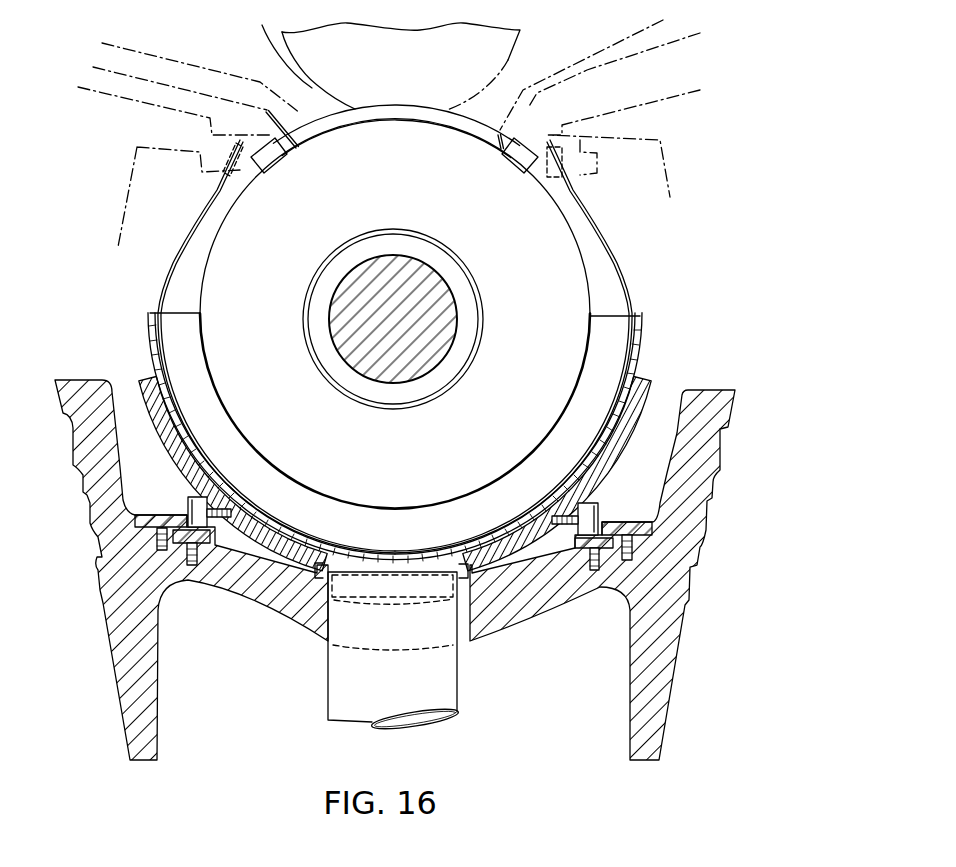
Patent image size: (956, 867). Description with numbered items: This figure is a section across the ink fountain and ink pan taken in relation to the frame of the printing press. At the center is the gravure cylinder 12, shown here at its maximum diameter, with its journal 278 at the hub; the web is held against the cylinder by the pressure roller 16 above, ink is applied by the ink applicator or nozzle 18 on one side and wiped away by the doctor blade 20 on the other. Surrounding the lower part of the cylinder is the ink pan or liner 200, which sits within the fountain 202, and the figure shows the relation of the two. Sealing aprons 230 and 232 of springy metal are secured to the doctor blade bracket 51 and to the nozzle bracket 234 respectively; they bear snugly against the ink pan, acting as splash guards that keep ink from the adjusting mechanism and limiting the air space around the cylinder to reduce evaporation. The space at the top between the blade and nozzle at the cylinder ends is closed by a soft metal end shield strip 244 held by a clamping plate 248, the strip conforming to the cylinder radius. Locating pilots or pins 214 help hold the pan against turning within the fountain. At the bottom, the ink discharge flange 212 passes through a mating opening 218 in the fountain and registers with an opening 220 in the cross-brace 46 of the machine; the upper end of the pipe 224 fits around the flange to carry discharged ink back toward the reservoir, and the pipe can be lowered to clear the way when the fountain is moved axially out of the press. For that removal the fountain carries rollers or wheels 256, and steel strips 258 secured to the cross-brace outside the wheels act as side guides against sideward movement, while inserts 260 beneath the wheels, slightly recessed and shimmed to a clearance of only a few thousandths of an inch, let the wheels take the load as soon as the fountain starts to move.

The gravure cylinder 12 is at (559, 213).
The pressure roller 16 is at (522, 45).
The ink applicator or nozzle 18 is at (500, 126).
The doctor blade 20 is at (305, 122).
The cross-brace 46 is at (162, 656).
The bracket 51 is at (136, 185).
The ink pan or liner 200 is at (563, 483).
The ink fountain 202 is at (636, 425).
The ink discharge flange 212 is at (468, 566).
The locating pilots or pins 214 is at (406, 556).
The mating opening 218 is at (315, 578).
The opening 220 is at (466, 645).
The pipe 224 is at (335, 655).
The sealing apron 230 is at (165, 262).
The sealing apron 232 is at (621, 247).
The nozzle bracket 234 is at (665, 175).
The curved strip 244 is at (338, 122).
The clamping plate 248 is at (400, 106).
The rollers or wheels 256 is at (190, 500).
The steel strips 258 is at (185, 517).
The inserts 260 is at (212, 540).
The journal 278 is at (412, 379).